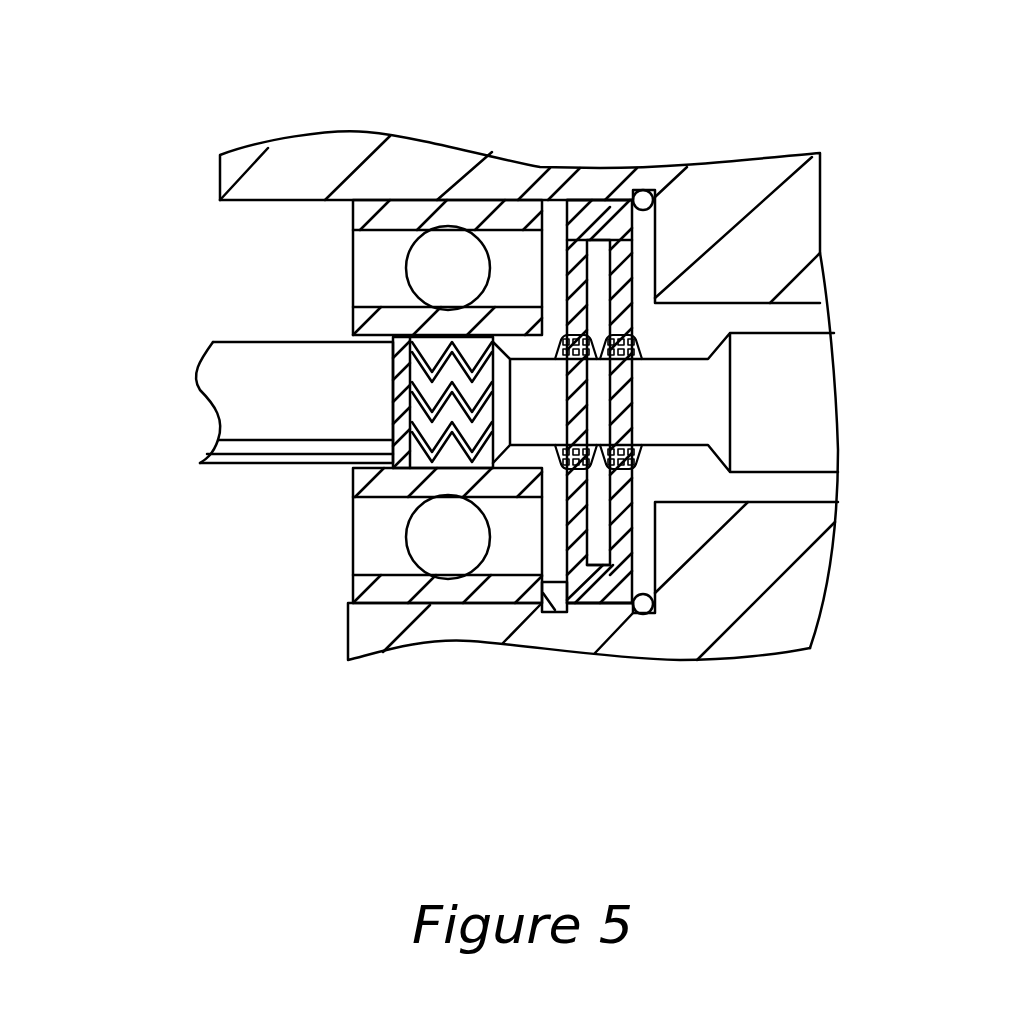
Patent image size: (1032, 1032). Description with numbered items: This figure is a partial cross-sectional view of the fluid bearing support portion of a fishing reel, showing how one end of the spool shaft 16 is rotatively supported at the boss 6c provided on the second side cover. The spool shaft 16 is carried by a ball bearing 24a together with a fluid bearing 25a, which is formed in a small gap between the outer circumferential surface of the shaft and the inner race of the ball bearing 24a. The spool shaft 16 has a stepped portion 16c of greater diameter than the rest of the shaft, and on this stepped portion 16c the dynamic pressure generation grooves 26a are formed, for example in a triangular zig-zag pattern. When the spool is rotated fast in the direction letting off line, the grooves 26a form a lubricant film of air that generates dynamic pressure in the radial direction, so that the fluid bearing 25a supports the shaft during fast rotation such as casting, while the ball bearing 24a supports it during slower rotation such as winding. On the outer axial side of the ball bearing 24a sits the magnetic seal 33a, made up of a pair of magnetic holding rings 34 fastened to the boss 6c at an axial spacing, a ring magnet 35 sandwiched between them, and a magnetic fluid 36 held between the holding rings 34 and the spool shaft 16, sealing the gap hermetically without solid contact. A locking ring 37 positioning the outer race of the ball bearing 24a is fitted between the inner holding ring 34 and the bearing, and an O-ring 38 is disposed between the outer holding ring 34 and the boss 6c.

The boss 6c is at (373, 637).
The spool shaft 16 is at (260, 380).
The stepped portion 16c is at (410, 348).
The ball bearing 24a is at (362, 313).
The fluid bearing 25a is at (430, 362).
The dynamic pressure generation grooves 26a is at (353, 470).
The magnetic seal 33a is at (625, 478).
The magnetic holding rings 34 is at (600, 333).
The ring magnet 35 is at (588, 567).
The magnetic fluid 36 is at (585, 333).
The locking ring 37 is at (555, 592).
The O-ring 38 is at (645, 195).